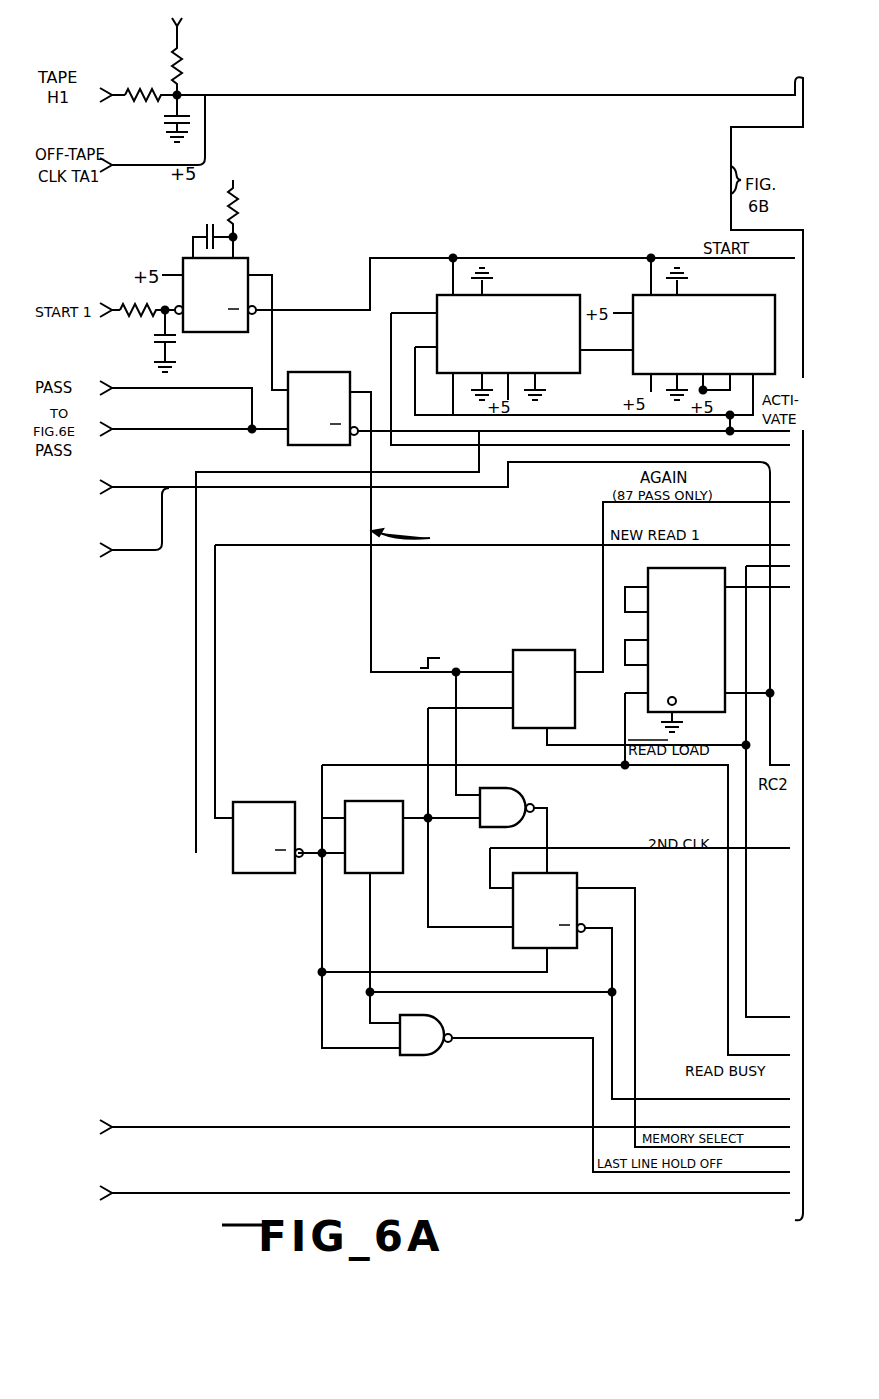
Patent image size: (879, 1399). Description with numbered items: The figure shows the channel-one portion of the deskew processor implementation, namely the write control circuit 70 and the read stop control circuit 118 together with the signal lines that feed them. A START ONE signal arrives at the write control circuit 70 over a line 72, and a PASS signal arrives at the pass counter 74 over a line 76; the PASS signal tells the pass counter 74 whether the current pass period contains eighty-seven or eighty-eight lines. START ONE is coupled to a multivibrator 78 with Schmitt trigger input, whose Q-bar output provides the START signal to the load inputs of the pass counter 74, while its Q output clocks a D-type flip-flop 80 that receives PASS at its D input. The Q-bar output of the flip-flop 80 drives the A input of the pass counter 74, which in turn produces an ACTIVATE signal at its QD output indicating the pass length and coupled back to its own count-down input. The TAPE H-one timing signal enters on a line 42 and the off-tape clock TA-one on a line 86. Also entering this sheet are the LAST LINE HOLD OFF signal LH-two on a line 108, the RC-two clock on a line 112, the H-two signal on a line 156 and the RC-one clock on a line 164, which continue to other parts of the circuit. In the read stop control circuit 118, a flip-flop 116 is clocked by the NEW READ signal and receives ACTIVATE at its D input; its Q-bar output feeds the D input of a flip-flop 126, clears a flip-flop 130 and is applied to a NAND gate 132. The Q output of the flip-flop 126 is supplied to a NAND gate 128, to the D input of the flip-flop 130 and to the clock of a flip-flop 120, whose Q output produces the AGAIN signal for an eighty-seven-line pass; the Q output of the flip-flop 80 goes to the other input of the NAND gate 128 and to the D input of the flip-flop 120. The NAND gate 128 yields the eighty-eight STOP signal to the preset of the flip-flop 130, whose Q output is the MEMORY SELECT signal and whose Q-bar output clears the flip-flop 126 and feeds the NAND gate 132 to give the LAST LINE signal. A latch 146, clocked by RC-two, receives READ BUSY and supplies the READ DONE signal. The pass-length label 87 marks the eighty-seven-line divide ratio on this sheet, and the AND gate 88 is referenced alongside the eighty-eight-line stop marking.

The line 42 is at (121, 90).
The line 86 is at (127, 162).
The write control circuit 70 is at (557, 280).
The pass counter 74 is at (635, 295).
The line 72 is at (140, 324).
The line 76 is at (145, 341).
The multivibrator 78 is at (210, 333).
The D-type flip-flop 80 is at (320, 372).
The line 112 is at (136, 479).
The line 108 is at (136, 544).
The 87 signal (divide by 43) 87 is at (425, 681).
The AND gate 88 is at (500, 673).
The latch 146 is at (648, 573).
The D-type flip-flop 120 is at (543, 650).
The D-type flip-flop 116 is at (265, 802).
The D-type flip-flop 126 is at (350, 803).
The NAND gate 128 is at (526, 790).
The D-type flip-flop 130 is at (513, 912).
The NAND gate 132 is at (444, 1018).
The read stop control circuit 118 is at (293, 891).
The line 156 is at (142, 1125).
The line 164 is at (147, 1182).